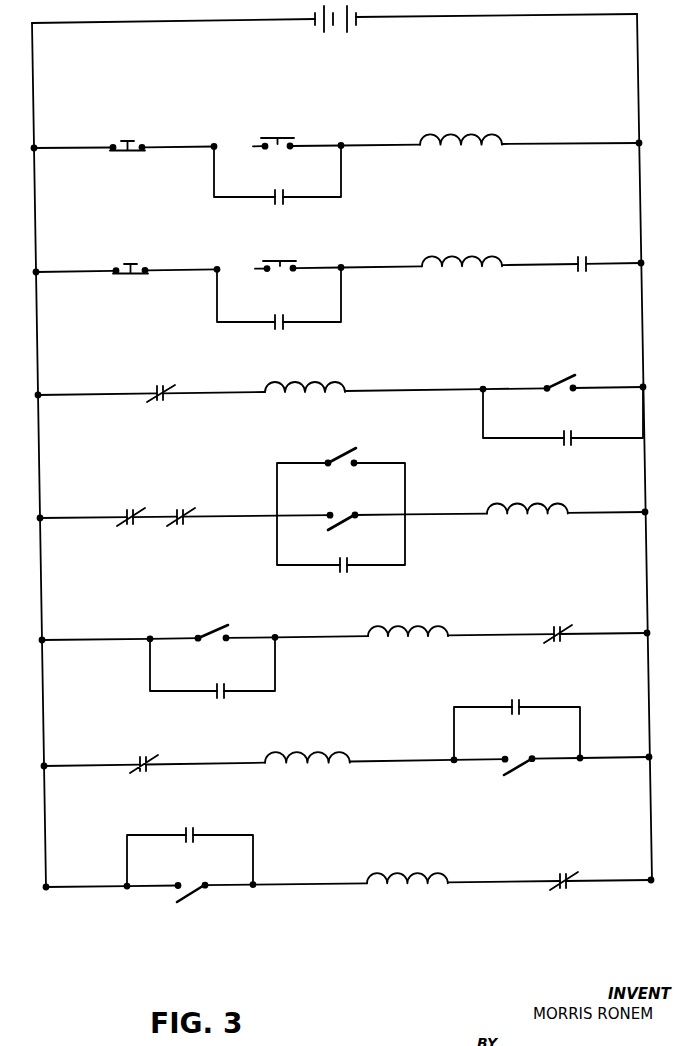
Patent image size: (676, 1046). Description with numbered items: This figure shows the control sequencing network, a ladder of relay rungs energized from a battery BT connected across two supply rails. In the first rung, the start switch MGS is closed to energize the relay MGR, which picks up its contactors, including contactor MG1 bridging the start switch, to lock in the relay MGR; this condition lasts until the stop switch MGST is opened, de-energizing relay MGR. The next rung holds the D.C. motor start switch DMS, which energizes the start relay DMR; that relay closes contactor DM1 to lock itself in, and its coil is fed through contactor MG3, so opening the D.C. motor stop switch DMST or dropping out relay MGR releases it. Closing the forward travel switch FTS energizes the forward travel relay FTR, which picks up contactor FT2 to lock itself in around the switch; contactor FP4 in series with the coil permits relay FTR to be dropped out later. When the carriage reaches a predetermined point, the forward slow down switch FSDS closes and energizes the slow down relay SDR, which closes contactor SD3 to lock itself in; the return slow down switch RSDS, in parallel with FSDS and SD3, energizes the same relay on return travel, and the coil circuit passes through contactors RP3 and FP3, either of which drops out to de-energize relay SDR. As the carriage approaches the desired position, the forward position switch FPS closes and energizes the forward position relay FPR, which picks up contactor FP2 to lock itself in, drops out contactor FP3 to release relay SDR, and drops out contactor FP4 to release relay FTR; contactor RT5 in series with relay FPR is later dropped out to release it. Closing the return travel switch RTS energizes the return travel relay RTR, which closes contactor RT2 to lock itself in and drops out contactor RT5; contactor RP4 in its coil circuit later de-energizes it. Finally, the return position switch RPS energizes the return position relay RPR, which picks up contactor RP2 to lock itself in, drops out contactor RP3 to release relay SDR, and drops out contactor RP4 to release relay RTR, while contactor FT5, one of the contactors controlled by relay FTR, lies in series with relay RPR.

The battery BT is at (332, 32).
The stop switch MGST is at (129, 131).
The start switch MGS is at (284, 128).
The contactor MG1 is at (285, 192).
The relay MGR is at (461, 130).
The D.C. motor stop switch DMST is at (134, 254).
The D.C. motor start switch DMS is at (292, 257).
The contactor DM1 is at (287, 316).
The start relay DMR is at (461, 255).
The contactor MG3 is at (585, 254).
The contactor FP4 is at (163, 379).
The forward travel relay FTR is at (304, 378).
The forward travel switch FTS is at (556, 373).
The contactor FT2 is at (572, 430).
The forward slow down switch FSDS is at (337, 453).
The contactor RP3 is at (127, 502).
The contactor FP3 is at (188, 502).
The return slow down switch RSDS is at (347, 507).
The contactor SD3 is at (353, 560).
The slow down relay SDR is at (528, 498).
The forward position switch FPS is at (215, 626).
The contactor FP2 is at (229, 686).
The forward position relay FPR is at (403, 623).
The contactor RT5 is at (561, 620).
The contactor RP4 is at (149, 750).
The return travel relay RTR is at (310, 748).
The contactor RT2 is at (519, 716).
The return travel switch RTS is at (527, 768).
The contactor RP2 is at (191, 844).
The return position switch RPS is at (197, 900).
The return position relay RPR is at (403, 872).
The forward travel relay contact 5 FT5 is at (565, 870).